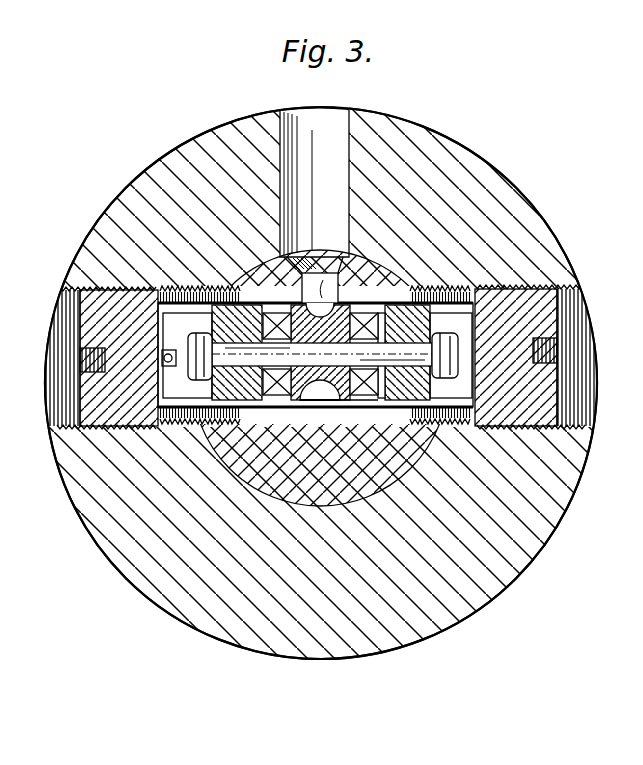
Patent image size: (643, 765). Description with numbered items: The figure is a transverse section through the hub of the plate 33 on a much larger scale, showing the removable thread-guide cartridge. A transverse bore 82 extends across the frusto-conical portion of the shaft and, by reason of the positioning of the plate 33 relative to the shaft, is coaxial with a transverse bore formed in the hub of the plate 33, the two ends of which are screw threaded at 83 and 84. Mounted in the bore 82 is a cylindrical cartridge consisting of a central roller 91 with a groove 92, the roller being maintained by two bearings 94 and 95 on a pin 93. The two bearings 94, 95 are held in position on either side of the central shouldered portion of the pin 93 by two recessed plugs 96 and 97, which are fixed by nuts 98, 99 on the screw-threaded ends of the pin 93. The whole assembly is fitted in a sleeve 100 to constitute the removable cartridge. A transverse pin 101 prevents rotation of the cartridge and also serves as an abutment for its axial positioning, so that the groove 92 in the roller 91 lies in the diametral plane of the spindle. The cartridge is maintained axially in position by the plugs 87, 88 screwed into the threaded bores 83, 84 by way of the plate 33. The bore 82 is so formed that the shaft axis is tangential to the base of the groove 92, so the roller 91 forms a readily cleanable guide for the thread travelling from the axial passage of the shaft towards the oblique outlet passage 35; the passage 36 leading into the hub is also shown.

The plate 33 is at (205, 588).
The bore 36 is at (332, 113).
The oblique hole 35 is at (333, 272).
The transverse bore 82 is at (320, 404).
The screw-threaded end 83 is at (99, 337).
The screw-threaded end 84 is at (543, 350).
The plug 87 is at (128, 430).
The plug 88 is at (512, 382).
The central roller 91 is at (350, 404).
The groove 92 is at (331, 404).
The pin 93 is at (348, 293).
The bearing 94 is at (298, 376).
The bearing 95 is at (402, 300).
The recessed plug 96 is at (414, 410).
The recessed plug 97 is at (314, 358).
The nut 98 is at (478, 300).
The nut 99 is at (198, 352).
The sleeve 100 is at (183, 427).
The transverse pin 101 is at (163, 345).